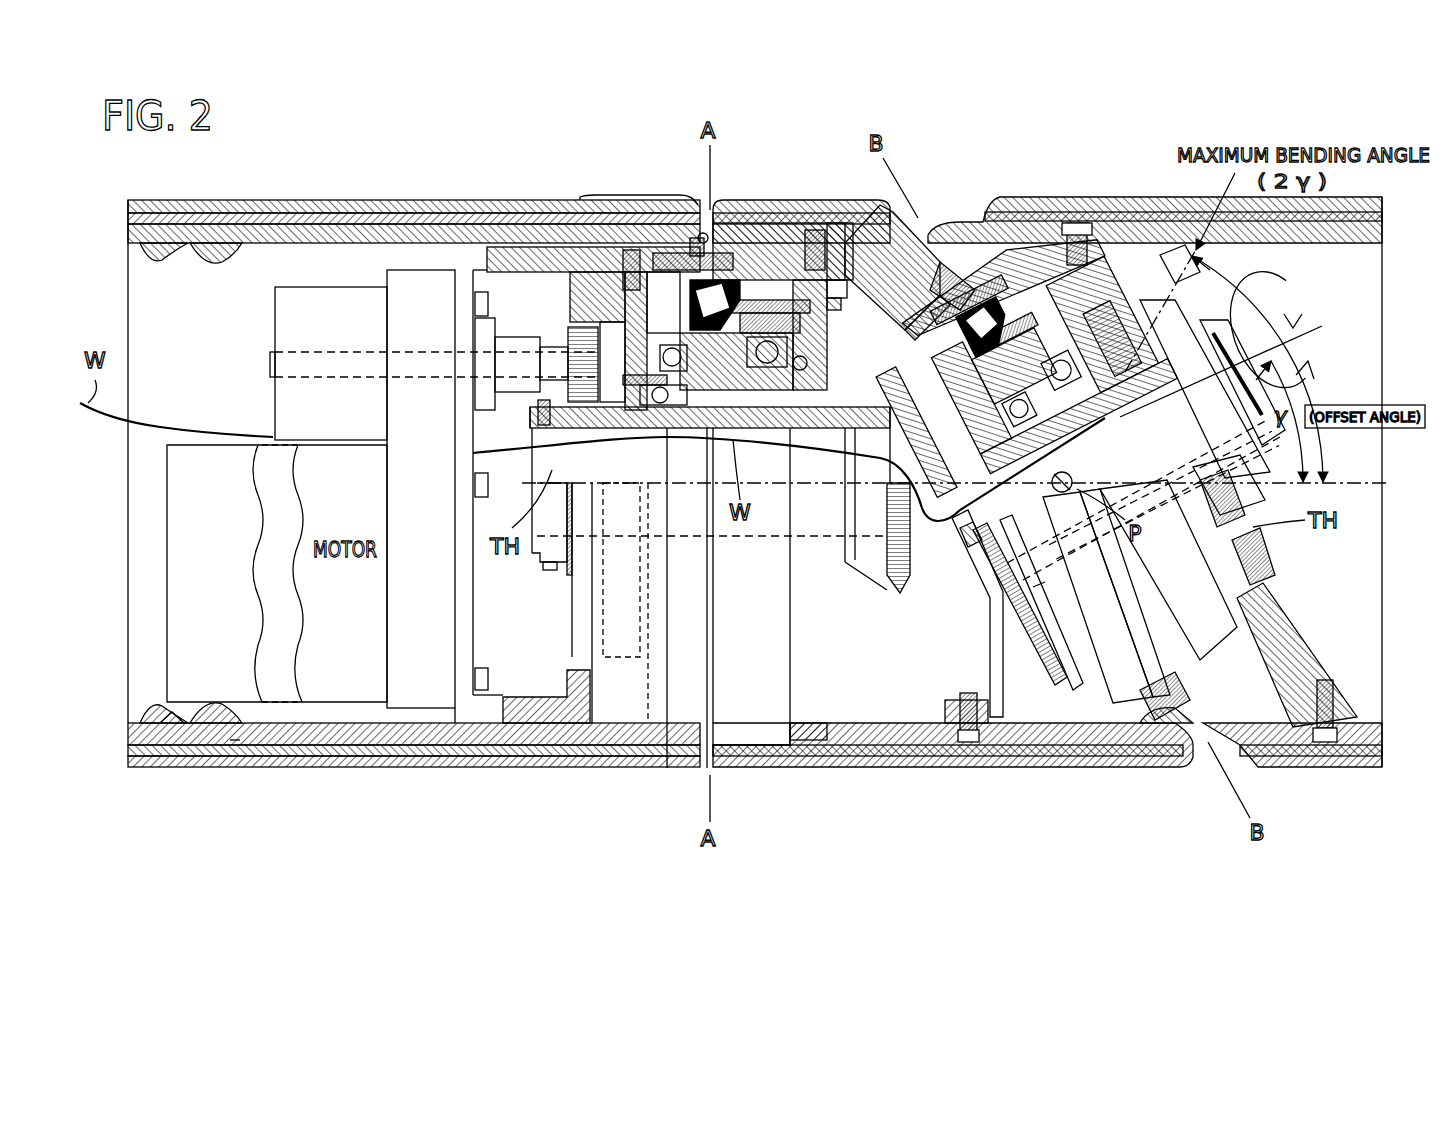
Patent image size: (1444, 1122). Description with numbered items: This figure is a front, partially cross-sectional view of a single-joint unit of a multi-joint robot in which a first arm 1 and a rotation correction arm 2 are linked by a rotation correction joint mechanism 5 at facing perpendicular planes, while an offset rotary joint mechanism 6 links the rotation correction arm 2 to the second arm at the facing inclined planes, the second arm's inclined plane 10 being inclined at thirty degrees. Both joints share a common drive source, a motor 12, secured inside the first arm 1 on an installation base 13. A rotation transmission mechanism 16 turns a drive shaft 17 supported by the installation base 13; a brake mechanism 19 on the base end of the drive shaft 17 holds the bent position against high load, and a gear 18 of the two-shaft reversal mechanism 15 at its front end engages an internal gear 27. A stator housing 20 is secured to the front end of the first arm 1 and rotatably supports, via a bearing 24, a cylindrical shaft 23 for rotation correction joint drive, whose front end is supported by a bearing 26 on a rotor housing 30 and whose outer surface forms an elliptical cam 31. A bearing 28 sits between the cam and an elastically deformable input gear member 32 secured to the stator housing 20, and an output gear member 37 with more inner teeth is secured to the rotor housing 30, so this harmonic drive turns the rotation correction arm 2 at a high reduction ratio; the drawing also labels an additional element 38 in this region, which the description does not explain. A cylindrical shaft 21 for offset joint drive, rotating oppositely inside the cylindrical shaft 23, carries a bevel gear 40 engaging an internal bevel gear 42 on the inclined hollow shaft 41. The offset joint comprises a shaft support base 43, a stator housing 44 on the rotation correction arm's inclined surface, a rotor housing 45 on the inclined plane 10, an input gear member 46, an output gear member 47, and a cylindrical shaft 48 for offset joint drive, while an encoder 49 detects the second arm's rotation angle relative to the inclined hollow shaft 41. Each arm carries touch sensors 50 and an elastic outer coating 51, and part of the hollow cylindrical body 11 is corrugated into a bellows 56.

The first arm 1 is at (272, 200).
The rotation correction arm 2 is at (913, 771).
The rotation correction joint mechanism 5 is at (782, 228).
The offset rotary joint mechanism 6 is at (1025, 200).
The inclined plane 10 is at (1283, 627).
The hollow cylindrical body 11 is at (407, 770).
The motor 12 is at (147, 708).
The installation base 13 is at (483, 712).
The two-shaft reversal mechanism 15 is at (503, 200).
The rotation transmission mechanism 16 is at (392, 690).
The drive shaft 17 is at (270, 366).
The gear 18 is at (567, 337).
The brake mechanism 19 is at (325, 300).
The stator housing 20 is at (662, 200).
The cylindrical shaft for offset joint drive 21 is at (585, 430).
The cylindrical shaft for rotation correction joint drive 23 is at (708, 362).
The bearing 24 is at (658, 428).
The bearing 26 is at (805, 430).
The internal gear 27 is at (577, 200).
The bearing 28 is at (825, 306).
The rotor housing 30 is at (817, 200).
The elliptical cam 31 is at (822, 342).
The input gear member 32 is at (766, 430).
The output gear member 37 is at (753, 200).
The thrust bearing 38 is at (537, 420).
The bevel gear 40 is at (888, 590).
The inclined hollow shaft 41 is at (963, 492).
The internal bevel gear 42 is at (1040, 640).
The shaft support base 43 is at (992, 621).
The stator housing 44 is at (912, 328).
The rotor housing 45 is at (980, 248).
The input gear member 46 is at (1122, 293).
The output gear member 47 is at (1103, 210).
The cylindrical shaft for offset joint drive 48 is at (985, 545).
The encoder 49 is at (1197, 340).
The touch sensors 50 is at (220, 768).
The elastic outer coating 51 is at (560, 768).
The bellows 56 is at (168, 724).